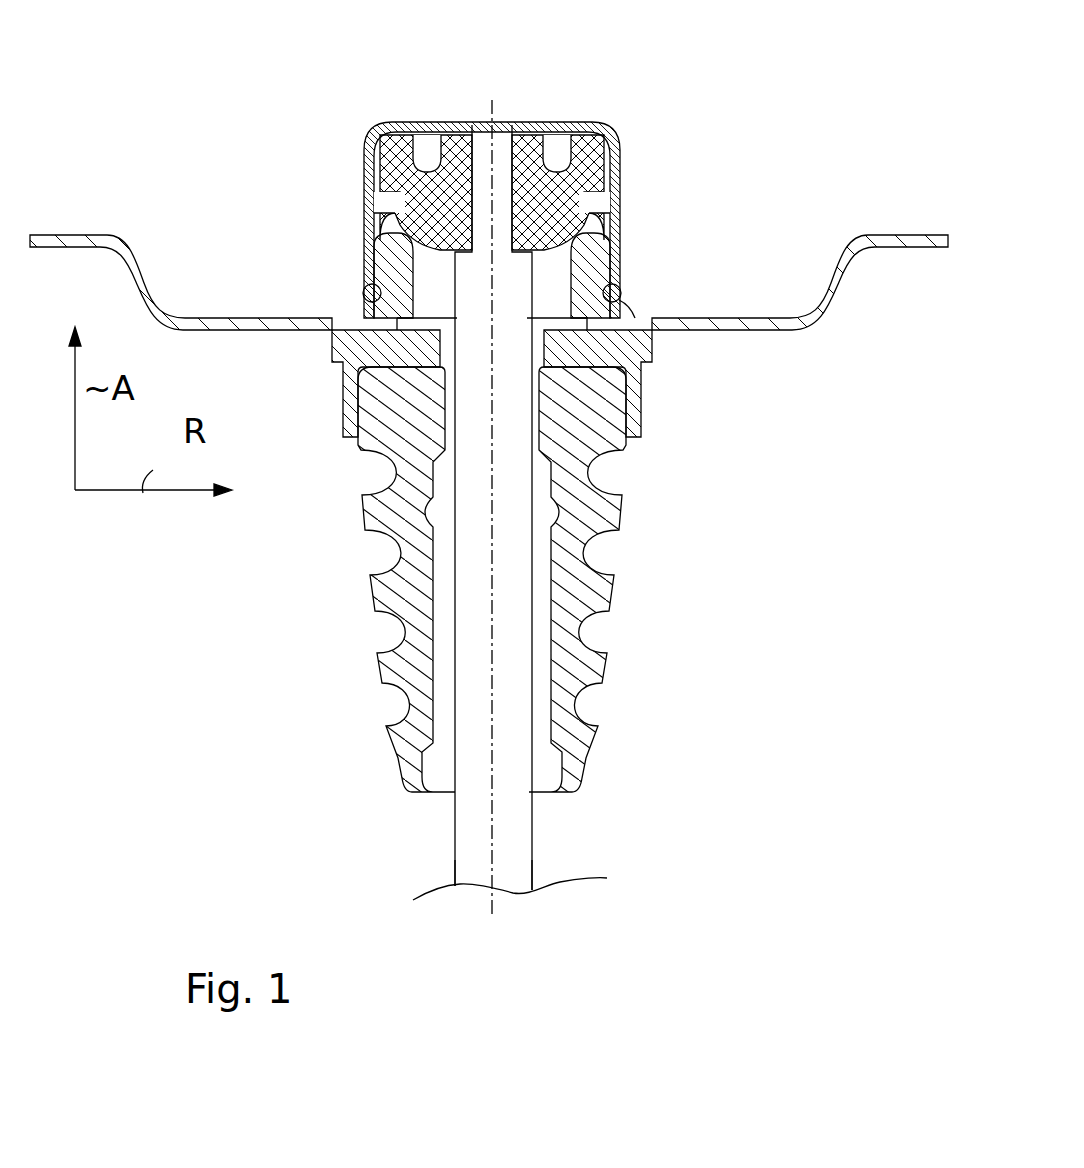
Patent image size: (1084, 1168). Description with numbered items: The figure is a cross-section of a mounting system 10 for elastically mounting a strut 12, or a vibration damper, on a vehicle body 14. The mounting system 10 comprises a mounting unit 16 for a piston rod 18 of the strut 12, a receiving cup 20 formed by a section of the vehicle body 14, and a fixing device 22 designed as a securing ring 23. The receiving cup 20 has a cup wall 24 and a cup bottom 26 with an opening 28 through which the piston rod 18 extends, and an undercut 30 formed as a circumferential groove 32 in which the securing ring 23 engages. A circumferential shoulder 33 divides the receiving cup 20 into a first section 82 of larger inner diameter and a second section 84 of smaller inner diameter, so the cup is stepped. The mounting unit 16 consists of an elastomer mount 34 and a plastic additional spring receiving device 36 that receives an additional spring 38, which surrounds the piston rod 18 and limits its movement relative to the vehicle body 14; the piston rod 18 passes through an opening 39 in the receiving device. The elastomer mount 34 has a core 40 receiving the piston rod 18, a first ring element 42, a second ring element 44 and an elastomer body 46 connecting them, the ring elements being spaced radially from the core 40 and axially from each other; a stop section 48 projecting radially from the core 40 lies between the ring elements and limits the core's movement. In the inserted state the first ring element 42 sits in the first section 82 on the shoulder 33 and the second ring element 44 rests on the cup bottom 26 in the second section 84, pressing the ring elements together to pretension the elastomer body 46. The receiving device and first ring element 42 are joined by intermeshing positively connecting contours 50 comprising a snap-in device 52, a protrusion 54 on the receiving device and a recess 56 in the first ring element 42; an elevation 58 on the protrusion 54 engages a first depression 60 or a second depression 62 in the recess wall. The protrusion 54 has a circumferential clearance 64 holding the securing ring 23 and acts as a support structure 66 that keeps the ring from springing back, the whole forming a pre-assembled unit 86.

The mounting system 10 is at (692, 110).
The strut 12 is at (582, 842).
The vehicle body 14 is at (748, 320).
The mounting unit 16 is at (630, 207).
The piston rod 18 is at (515, 558).
The receiving cup 20 is at (382, 128).
The fixing device 22 is at (620, 282).
The securing ring 23 is at (627, 290).
The cup wall 24 is at (622, 158).
The cup bottom 26 is at (552, 137).
The opening 28 is at (533, 128).
The undercut 30 is at (360, 280).
The circumferential groove 32 is at (363, 293).
The circumferential shoulder 33 is at (363, 237).
The elastomer mount 34 is at (440, 162).
The additional spring receiving device 36 is at (332, 383).
The additional spring 38 is at (378, 517).
The opening 39 is at (640, 360).
The core 40 is at (620, 143).
The first ring element 42 is at (634, 212).
The second ring element 44 is at (383, 150).
The elastomer body 46 is at (367, 168).
The stop section 48 is at (620, 180).
The positively connecting contours 50 is at (333, 330).
The snap-in device 52 is at (622, 228).
The protrusion 54 is at (653, 330).
The recess 56 is at (360, 227).
The elevation 58 is at (442, 273).
The first depression 60 is at (492, 307).
The second depression 62 is at (549, 273).
The circumferential clearance 64 is at (360, 303).
The support structure 66 is at (655, 345).
The first section 82 is at (620, 145).
The second section 84 is at (360, 280).
The pre-assembled unit 86 is at (546, 164).